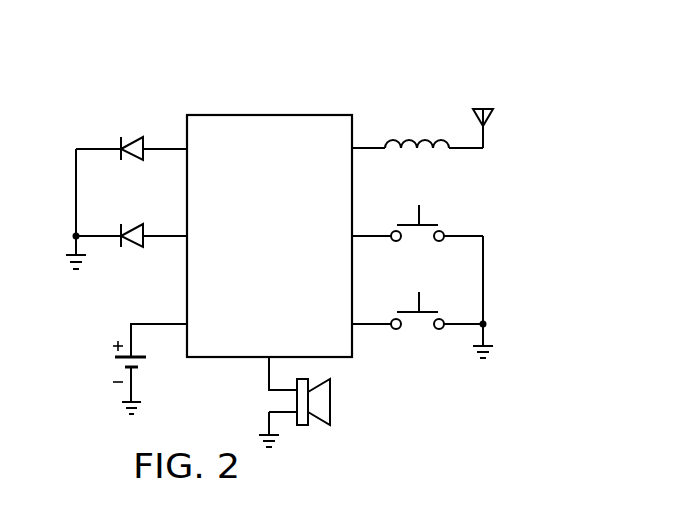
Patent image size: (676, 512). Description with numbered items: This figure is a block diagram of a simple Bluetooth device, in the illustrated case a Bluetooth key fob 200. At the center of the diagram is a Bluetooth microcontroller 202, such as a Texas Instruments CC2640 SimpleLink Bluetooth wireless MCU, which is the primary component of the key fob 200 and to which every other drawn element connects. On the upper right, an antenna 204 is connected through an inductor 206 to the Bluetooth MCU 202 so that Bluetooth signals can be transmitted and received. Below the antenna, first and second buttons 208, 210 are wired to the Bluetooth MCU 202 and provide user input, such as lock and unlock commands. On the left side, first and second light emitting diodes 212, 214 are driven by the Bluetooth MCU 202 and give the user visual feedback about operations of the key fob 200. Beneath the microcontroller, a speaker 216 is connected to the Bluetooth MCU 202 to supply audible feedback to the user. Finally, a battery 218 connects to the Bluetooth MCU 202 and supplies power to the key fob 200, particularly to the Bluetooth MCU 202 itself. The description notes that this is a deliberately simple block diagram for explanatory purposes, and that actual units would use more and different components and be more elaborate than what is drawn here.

The Bluetooth key fob 200 is at (252, 88).
The Bluetooth microcontroller 202 is at (247, 281).
The antenna 204 is at (490, 120).
The inductor 206 is at (425, 130).
The first button 208 is at (432, 222).
The second button 210 is at (432, 310).
The first light emitting diode 212 is at (132, 139).
The second light emitting diode 214 is at (132, 226).
The speaker 216 is at (332, 400).
The battery 218 is at (112, 363).